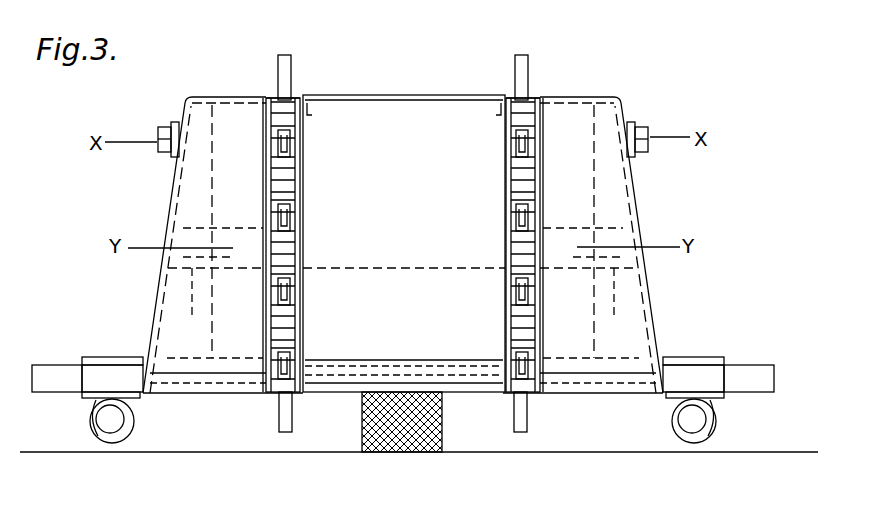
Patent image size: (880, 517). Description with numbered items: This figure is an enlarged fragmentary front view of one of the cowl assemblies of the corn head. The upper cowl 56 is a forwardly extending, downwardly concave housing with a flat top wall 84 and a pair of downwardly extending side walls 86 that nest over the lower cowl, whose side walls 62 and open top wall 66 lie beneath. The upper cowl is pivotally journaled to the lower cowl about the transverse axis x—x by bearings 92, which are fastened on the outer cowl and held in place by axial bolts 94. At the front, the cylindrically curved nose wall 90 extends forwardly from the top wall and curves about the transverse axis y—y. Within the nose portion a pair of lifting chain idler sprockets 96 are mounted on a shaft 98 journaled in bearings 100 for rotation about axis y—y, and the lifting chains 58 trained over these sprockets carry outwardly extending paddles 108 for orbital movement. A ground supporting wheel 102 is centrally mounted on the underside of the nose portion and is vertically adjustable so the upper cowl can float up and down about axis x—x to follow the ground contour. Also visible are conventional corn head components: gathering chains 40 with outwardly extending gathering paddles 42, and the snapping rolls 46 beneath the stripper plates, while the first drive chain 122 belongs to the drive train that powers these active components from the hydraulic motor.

The gathering chain 40 is at (110, 372).
The gathering paddle 42 is at (50, 370).
The snapping roll 46 is at (108, 421).
The upper cowl 56 is at (623, 91).
The lifting chain 58 is at (284, 186).
The side wall 62 is at (172, 213).
The open top wall 66 is at (582, 88).
The flat top wall 84 is at (429, 90).
The side wall 86 is at (171, 193).
The front nose wall 90 is at (411, 272).
The bearing 92 is at (177, 124).
The axial bolt 94 is at (160, 137).
The lifting chain idler sprocket 96 is at (541, 170).
The shaft 98 is at (417, 266).
The bearing 100 is at (403, 231).
The ground supporting wheel 102 is at (414, 449).
The paddle 108 is at (279, 61).
The first drive chain 122 is at (316, 67).